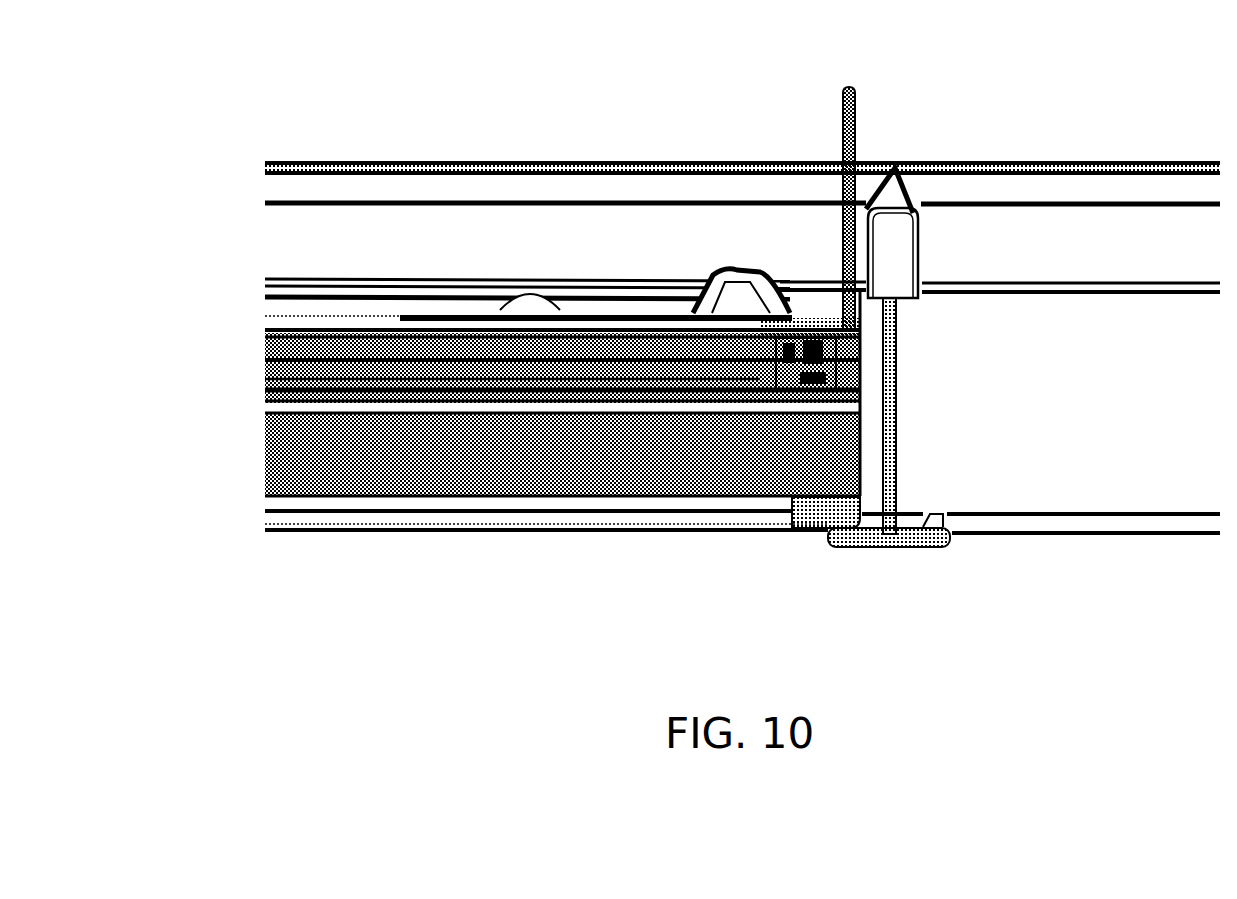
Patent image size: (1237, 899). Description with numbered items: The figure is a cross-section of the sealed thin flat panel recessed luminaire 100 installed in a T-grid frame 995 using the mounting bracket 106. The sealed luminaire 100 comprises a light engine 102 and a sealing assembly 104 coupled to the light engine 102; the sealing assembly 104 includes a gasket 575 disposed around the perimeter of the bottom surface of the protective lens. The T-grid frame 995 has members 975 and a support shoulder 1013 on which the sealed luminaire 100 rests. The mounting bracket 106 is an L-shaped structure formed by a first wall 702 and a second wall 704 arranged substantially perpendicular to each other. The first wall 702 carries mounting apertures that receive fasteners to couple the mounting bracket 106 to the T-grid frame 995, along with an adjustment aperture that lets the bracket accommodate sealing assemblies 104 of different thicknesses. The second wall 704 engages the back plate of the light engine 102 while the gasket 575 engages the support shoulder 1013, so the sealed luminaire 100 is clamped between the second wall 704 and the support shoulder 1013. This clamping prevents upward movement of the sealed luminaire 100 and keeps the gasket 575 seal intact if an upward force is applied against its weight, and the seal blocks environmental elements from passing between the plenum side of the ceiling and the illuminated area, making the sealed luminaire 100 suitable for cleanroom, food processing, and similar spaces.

The sealed luminaire 100 is at (449, 211).
The light engine 102 is at (372, 243).
The sealing assembly 104 is at (366, 558).
The mounting bracket 106 is at (772, 208).
The first wall 702 is at (842, 108).
The second wall 704 is at (688, 320).
The gasket 575 is at (800, 512).
The members 975 is at (1010, 488).
The T-grid frame 995 is at (965, 120).
The support shoulder 1013 is at (848, 533).